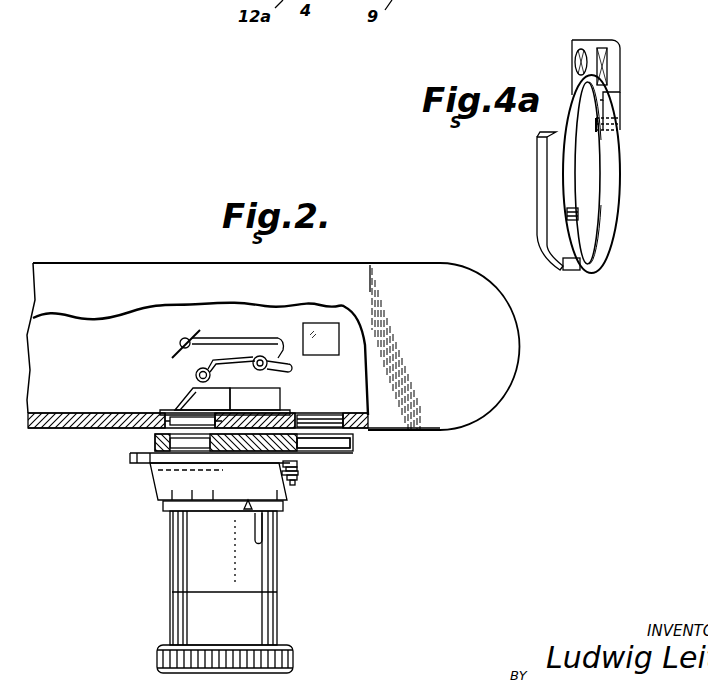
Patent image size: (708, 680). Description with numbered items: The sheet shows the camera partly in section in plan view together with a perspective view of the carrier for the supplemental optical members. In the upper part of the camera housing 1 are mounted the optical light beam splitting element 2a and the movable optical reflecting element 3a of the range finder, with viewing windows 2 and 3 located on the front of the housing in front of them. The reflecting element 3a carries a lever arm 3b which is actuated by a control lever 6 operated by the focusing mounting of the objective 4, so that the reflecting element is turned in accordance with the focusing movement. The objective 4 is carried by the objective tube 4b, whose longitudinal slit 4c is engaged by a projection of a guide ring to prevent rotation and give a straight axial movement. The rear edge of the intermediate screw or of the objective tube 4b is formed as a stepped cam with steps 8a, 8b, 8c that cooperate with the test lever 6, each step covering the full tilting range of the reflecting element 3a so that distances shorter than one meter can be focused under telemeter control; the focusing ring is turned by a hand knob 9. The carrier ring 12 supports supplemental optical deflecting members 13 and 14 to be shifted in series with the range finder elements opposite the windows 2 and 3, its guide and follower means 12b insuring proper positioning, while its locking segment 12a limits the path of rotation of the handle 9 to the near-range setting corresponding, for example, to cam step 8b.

In FIG. 2, the camera housing 1 is at (86, 420).
In FIG. 2, the viewing window 2 is at (324, 420).
In FIG. 2, the optical light beam splitting element 2a is at (324, 336).
In FIG. 2, the viewing window 3 is at (182, 420).
In FIG. 2, the movable optical reflecting element 3a is at (182, 343).
In FIG. 2, the lever arm 3b is at (263, 340).
In FIG. 2, the control lever 6 is at (279, 344).
In FIG. 2, the cam step 8a is at (202, 398).
In FIG. 2, the cam step 8b is at (276, 388).
In FIG. 2, the cam step 8c is at (225, 401).
In FIG. 2, the hand knob 9 is at (300, 474).
In FIG. 2, the supplemental optical deflecting member 13 is at (333, 440).
In FIG. 4A, the supplemental optical deflecting member 13 is at (608, 68).
In FIG. 2, the supplemental optical deflecting member 14 is at (192, 444).
In FIG. 4A, the supplemental optical deflecting member 14 is at (578, 55).
In FIG. 2, the objective 4 is at (250, 614).
In FIG. 2, the objective tube 4b is at (250, 567).
In FIG. 2, the longitudinal slit 4c is at (262, 528).
In FIG. 4A, the carrier ring 12 is at (569, 96).
In FIG. 4A, the locking segment 12a is at (552, 214).
In FIG. 4A, the guide and follower means 12b is at (614, 120).